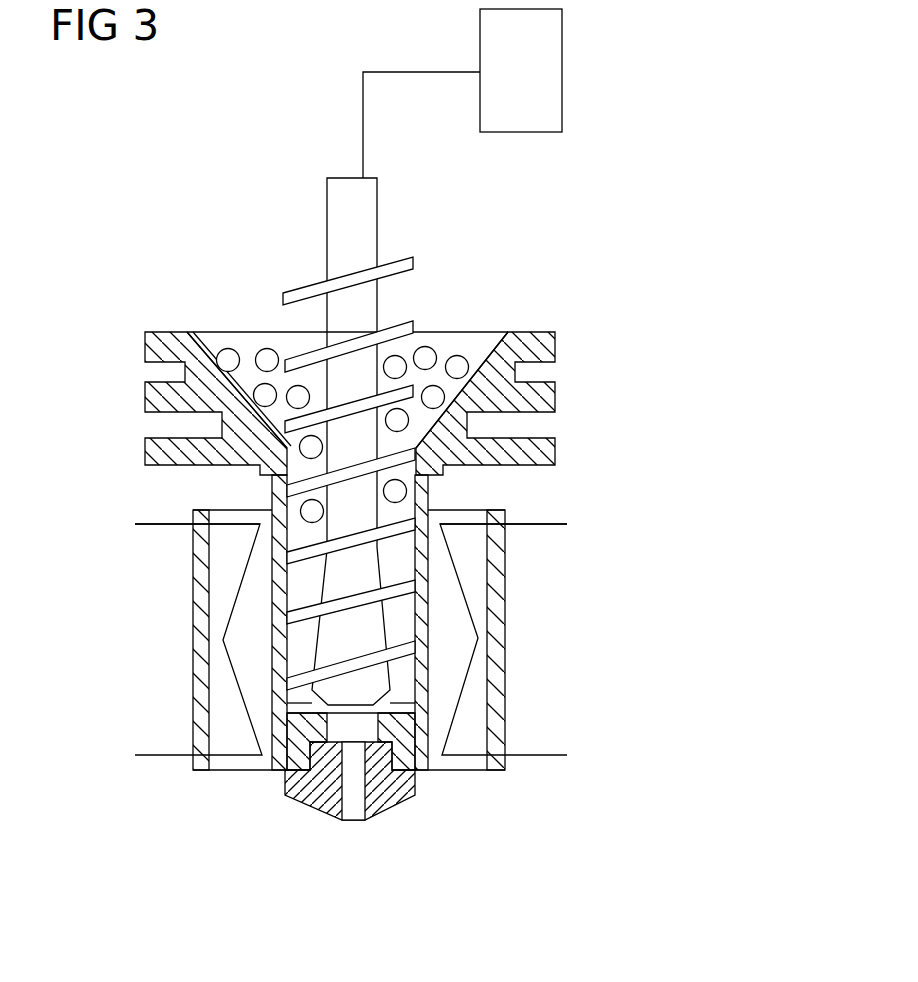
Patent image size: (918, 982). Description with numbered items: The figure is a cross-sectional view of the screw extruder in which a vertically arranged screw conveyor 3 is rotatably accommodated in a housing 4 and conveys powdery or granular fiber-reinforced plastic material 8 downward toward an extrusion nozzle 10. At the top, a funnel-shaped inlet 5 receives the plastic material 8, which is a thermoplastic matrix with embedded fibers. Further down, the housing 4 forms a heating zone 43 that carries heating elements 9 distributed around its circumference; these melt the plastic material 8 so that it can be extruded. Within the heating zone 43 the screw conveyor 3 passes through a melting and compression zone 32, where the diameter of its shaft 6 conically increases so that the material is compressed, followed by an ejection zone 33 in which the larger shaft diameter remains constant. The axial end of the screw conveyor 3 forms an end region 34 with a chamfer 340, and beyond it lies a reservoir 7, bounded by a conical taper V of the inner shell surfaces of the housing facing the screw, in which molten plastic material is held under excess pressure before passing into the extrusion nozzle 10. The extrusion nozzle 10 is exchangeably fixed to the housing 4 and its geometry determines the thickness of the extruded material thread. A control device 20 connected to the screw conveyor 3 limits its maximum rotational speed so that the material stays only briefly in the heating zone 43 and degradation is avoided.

The control device 20 is at (506, 82).
The shaft 6 is at (323, 194).
The screw conveyor 3 is at (411, 241).
The fiber-reinforced plastic material 8 is at (210, 337).
The inlet 5 is at (491, 328).
The housing 4 is at (131, 373).
The heating zone 43 is at (519, 504).
The heating element 9 is at (589, 523).
The melting and compression zone 32 is at (300, 537).
The ejection zone 33 is at (286, 656).
The end region 34 is at (404, 686).
The taper V is at (400, 710).
The chamfer 340 is at (313, 705).
The reservoir 7 is at (330, 752).
The extrusion nozzle 10 is at (433, 796).